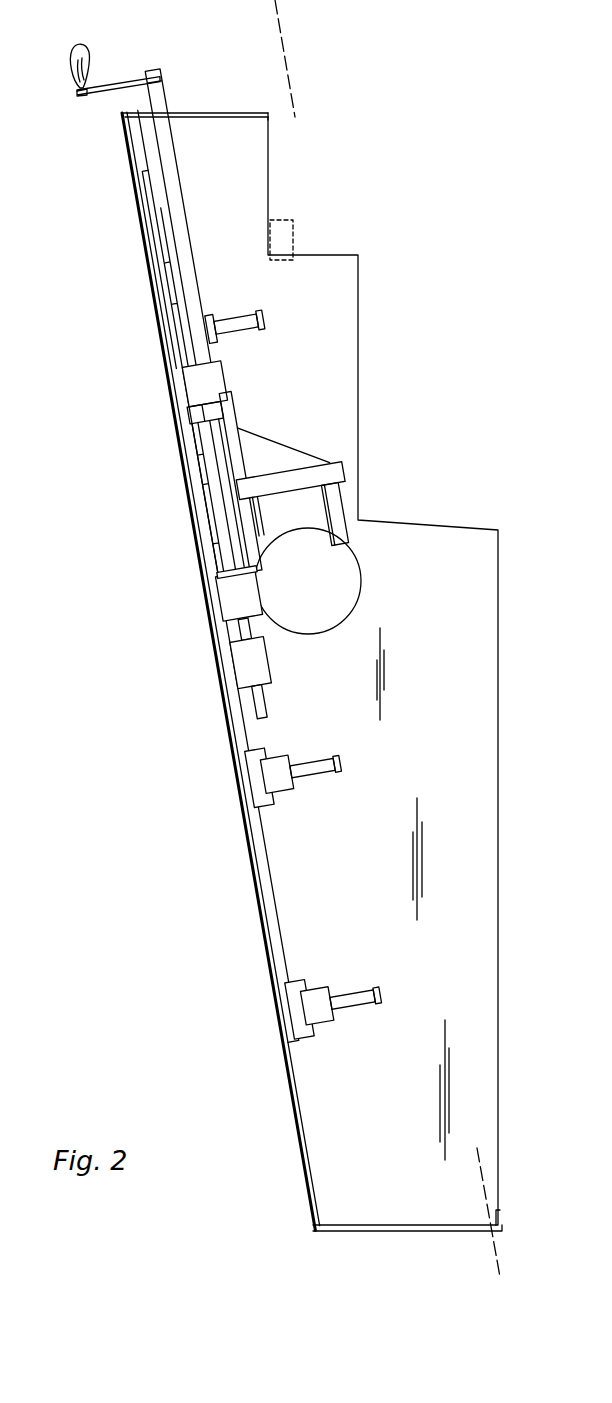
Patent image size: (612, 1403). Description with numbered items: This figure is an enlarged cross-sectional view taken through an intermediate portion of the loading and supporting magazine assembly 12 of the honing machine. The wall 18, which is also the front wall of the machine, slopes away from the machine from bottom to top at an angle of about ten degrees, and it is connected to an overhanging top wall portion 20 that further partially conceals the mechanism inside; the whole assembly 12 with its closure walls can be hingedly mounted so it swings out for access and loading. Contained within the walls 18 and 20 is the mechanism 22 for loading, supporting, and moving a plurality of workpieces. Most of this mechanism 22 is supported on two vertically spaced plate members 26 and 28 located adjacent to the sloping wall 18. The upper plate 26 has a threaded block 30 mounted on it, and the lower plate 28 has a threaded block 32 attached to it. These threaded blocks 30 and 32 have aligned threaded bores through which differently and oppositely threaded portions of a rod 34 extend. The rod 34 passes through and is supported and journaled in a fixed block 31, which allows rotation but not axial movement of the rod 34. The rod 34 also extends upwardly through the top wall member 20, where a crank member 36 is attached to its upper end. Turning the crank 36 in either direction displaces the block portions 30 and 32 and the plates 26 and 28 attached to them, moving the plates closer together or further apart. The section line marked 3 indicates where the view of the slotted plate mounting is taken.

The loading and supporting magazine assembly 12 is at (326, 206).
The overhanging top wall portion 20 is at (192, 112).
The wall 18 is at (213, 637).
The mechanism 22 is at (342, 645).
The plate member 26 is at (162, 282).
The plate member 28 is at (270, 905).
The threaded block 30 is at (213, 383).
The fixed block 31 is at (235, 592).
The threaded block 32 is at (258, 670).
The rod 34 is at (178, 223).
The crank member 36 is at (113, 80).
The section line 3- 3 is at (246, 11).